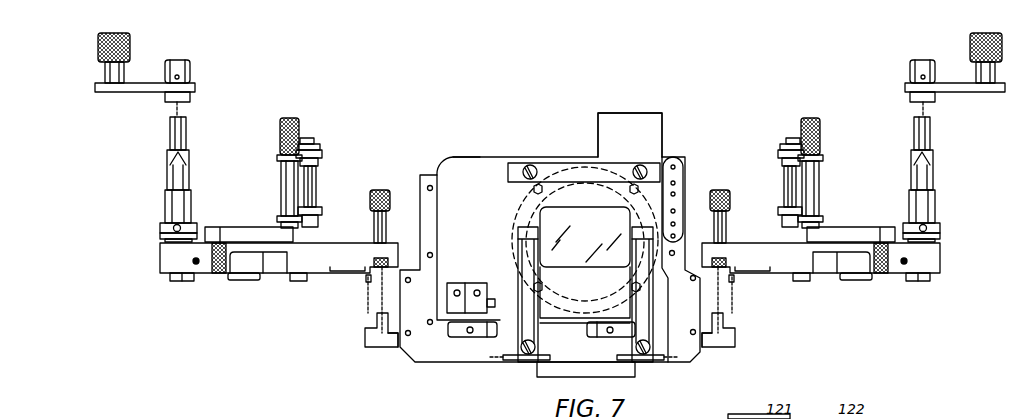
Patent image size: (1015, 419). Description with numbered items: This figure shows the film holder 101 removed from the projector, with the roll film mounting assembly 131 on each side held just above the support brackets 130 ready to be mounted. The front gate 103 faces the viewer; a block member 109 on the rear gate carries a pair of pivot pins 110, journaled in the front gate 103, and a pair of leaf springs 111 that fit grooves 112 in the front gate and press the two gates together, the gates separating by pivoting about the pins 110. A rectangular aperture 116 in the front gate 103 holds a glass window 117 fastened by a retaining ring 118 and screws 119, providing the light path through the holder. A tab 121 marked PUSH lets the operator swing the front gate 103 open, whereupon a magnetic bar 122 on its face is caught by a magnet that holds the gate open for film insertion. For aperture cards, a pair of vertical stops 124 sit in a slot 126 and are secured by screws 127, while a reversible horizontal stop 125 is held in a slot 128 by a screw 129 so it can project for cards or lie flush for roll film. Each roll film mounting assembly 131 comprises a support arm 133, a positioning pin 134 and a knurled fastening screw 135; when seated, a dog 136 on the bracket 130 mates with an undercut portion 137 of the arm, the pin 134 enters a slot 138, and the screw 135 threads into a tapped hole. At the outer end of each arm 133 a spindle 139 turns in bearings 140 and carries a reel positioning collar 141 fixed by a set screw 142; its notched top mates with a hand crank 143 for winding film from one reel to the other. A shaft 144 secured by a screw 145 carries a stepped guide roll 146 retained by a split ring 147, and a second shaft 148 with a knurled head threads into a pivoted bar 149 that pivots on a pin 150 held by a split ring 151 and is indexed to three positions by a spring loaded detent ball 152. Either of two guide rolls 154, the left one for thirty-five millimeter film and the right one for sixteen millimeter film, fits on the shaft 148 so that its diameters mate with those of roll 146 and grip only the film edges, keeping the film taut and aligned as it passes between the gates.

The film holder 101 is at (453, 146).
The front gate 103 is at (512, 157).
The block member 109 is at (590, 364).
The pivot pins 110 is at (520, 363).
The leaf springs 111 is at (526, 272).
The grooves 112 is at (525, 226).
The rectangular aperture 116 is at (586, 206).
The glass window 117 is at (530, 205).
The retaining ring 118 is at (616, 170).
The screws 119 is at (633, 190).
The tab 121 is at (618, 113).
The magnetic bar 122 is at (560, 163).
The vertical stops 124 is at (470, 336).
The horizontal stop 125 is at (676, 167).
The slot 126 is at (455, 328).
The screws 127 is at (472, 334).
The slot 128 is at (674, 157).
The screw 129 is at (676, 183).
The support brackets 130 is at (388, 348).
The roll film mounting assembly 131 is at (288, 111).
The support arm 133 is at (345, 271).
The positioning pin 134 is at (368, 282).
The knurled fastening screw 135 is at (370, 200).
The dog 136 is at (365, 325).
The undercut portion 137 is at (374, 262).
The slot 138 is at (365, 340).
The spindle 139 is at (188, 194).
The bearings 140 is at (160, 238).
The reel positioning collar 141 is at (196, 226).
The set screw 142 is at (170, 227).
The hand crank 143 is at (166, 93).
The shaft 144 is at (302, 139).
The screw 145 is at (300, 281).
The guide roll 146 is at (321, 155).
The split ring 147 is at (310, 147).
The second shaft 148 is at (280, 130).
The pivoted bar 149 is at (258, 227).
The pin 150 is at (240, 281).
The split ring 151 is at (214, 291).
The spring loaded detent ball 152 is at (222, 242).
The guide rolls 154 is at (279, 181).